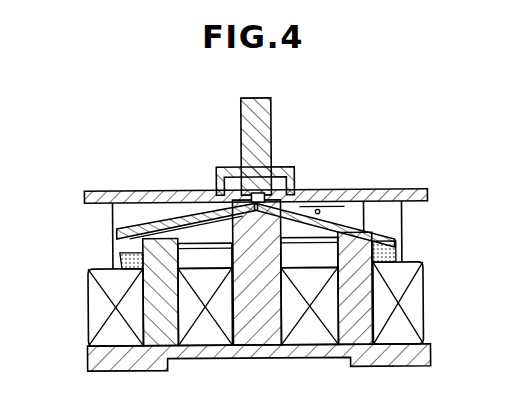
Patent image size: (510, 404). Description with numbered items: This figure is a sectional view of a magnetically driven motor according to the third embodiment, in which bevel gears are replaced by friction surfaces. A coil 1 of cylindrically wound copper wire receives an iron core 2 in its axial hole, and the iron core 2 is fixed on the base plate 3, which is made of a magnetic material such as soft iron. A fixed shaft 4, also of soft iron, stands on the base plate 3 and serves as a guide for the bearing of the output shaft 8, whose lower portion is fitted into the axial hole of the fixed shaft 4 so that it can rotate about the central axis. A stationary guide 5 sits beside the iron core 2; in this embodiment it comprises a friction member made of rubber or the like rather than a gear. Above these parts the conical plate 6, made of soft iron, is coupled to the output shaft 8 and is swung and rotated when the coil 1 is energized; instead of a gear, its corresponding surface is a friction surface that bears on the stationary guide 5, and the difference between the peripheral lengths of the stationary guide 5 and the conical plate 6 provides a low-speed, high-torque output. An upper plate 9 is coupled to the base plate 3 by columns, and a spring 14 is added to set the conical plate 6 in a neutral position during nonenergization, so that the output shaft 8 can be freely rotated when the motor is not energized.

The coil 1 is at (415, 318).
The iron core 2 is at (365, 302).
The base plate 3 is at (90, 357).
The fixed shaft 4 is at (252, 332).
The stationary guide 5 is at (121, 258).
The conical plate 6 is at (349, 234).
The output shaft 8 is at (273, 120).
The upper plate 9 is at (428, 193).
The spring 14 is at (341, 204).